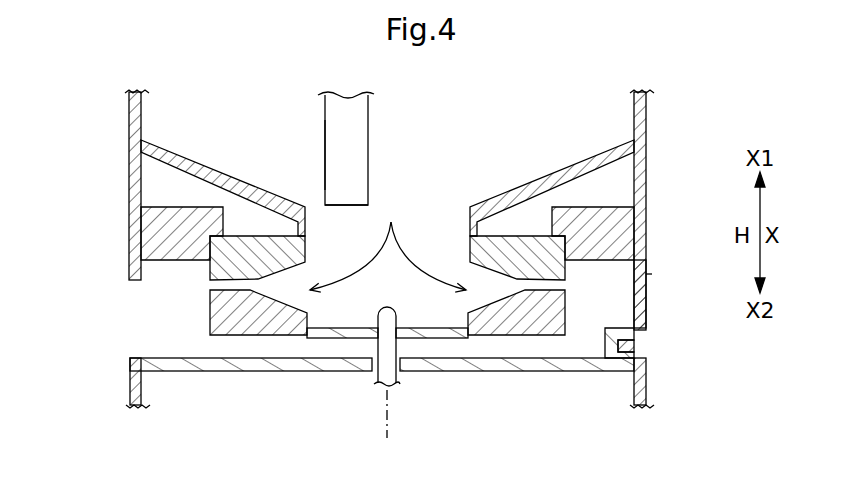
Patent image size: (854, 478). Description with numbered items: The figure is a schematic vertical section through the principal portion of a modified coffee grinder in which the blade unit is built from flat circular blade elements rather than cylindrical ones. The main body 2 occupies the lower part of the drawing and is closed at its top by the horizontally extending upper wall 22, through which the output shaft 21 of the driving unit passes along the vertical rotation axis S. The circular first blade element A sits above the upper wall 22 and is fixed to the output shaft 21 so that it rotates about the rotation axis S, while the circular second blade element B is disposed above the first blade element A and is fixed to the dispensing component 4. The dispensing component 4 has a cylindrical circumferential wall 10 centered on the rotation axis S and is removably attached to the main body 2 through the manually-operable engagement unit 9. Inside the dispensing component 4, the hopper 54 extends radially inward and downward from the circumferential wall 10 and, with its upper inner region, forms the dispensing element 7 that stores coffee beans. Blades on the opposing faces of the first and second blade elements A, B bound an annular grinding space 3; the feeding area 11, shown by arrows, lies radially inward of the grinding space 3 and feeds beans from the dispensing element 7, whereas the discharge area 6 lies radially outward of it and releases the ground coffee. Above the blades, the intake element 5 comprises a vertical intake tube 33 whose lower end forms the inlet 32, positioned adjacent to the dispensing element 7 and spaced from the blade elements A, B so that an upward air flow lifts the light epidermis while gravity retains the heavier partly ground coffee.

The main body 2 is at (648, 385).
The grinding space 3 is at (264, 288).
The dispensing component 4 is at (648, 131).
The intake element 5 is at (372, 133).
The discharge area 6 is at (212, 288).
The dispensing element 7 is at (590, 90).
The manually-operable engagement unit 9 is at (652, 338).
The circumferential wall 10 is at (646, 306).
The feeding area 11 is at (388, 244).
The output shaft 21 is at (385, 340).
The upper wall 22 is at (525, 372).
The inlet 32 is at (340, 207).
The intake tube 33 is at (333, 152).
The hopper 54 is at (612, 172).
The first blade element A is at (240, 328).
The second blade element B is at (657, 274).
The rotation axis S is at (389, 427).